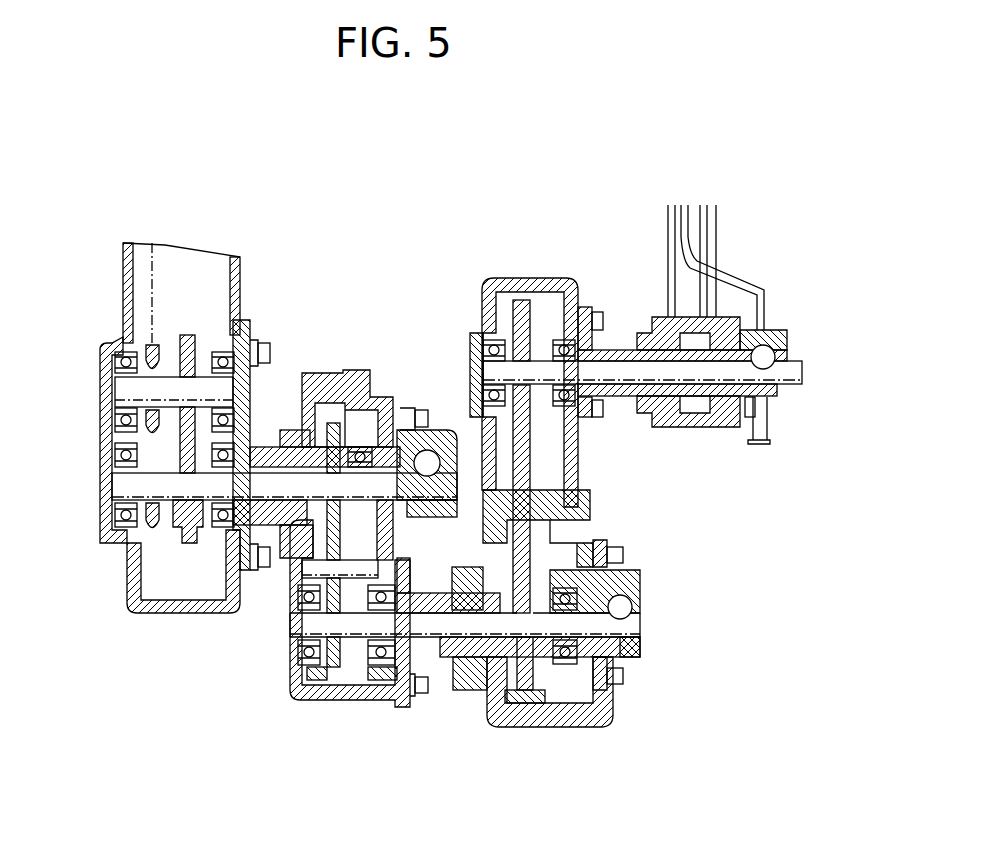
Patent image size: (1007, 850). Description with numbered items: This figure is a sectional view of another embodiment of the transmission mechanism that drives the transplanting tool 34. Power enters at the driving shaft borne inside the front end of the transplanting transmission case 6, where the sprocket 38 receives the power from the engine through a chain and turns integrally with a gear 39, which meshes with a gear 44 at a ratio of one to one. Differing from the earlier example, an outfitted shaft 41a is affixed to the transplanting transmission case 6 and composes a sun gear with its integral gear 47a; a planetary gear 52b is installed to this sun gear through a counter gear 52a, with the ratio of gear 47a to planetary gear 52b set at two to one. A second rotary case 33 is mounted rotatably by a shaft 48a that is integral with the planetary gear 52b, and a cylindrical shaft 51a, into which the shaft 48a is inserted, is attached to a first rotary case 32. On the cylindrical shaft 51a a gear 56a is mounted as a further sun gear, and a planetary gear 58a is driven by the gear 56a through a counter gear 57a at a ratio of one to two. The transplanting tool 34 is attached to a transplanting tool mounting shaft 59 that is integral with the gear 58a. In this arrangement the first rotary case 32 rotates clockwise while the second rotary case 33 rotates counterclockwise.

The transplanting transmission case 6 is at (120, 268).
The sprocket 38 is at (125, 335).
The gear 39 is at (197, 337).
The outfitted shaft 41a is at (265, 445).
The gear 47a is at (333, 423).
The gear 44 is at (178, 528).
The counter gear 52a is at (287, 593).
The planetary gear 52b is at (335, 665).
The first rotary case 32 is at (293, 698).
The shaft 48a is at (437, 643).
The cylindrical shaft 51a is at (473, 660).
The gear 56a is at (537, 673).
The second rotary case 33 is at (578, 718).
The counter gear 57a is at (530, 480).
The planetary gear 58a is at (518, 317).
The transplanting tool mounting shaft 59 is at (805, 373).
The transplanting tool 34 is at (750, 268).